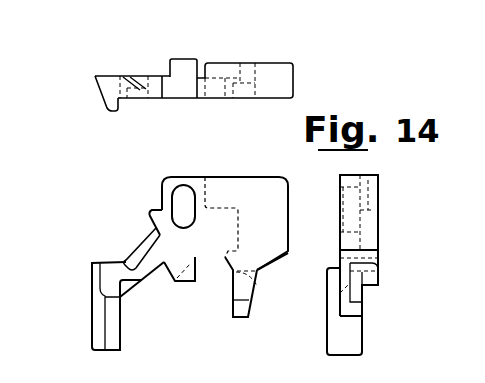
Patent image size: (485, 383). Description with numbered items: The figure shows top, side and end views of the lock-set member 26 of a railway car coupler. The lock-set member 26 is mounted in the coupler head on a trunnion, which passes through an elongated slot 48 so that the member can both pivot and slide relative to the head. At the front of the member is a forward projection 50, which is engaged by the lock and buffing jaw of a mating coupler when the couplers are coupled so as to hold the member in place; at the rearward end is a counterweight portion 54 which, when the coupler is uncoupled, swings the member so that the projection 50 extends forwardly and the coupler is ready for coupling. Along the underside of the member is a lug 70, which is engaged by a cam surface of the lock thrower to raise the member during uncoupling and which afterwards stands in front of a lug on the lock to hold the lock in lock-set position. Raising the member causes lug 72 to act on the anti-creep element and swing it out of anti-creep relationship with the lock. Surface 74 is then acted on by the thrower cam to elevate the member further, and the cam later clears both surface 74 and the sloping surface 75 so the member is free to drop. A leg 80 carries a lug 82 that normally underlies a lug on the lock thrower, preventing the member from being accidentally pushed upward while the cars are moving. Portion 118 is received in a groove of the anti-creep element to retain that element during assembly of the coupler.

The lock-set member 26 is at (163, 100).
The elongated slot 48 is at (183, 185).
The forward projection 50 is at (105, 93).
The counterweight portion 54 is at (283, 70).
The lug 70 is at (183, 60).
The lug 72 is at (150, 212).
The surface 74 is at (258, 283).
The sloping surface 75 is at (273, 262).
The leg 80 is at (343, 295).
The lug 82 is at (235, 317).
The portion 118 is at (142, 83).